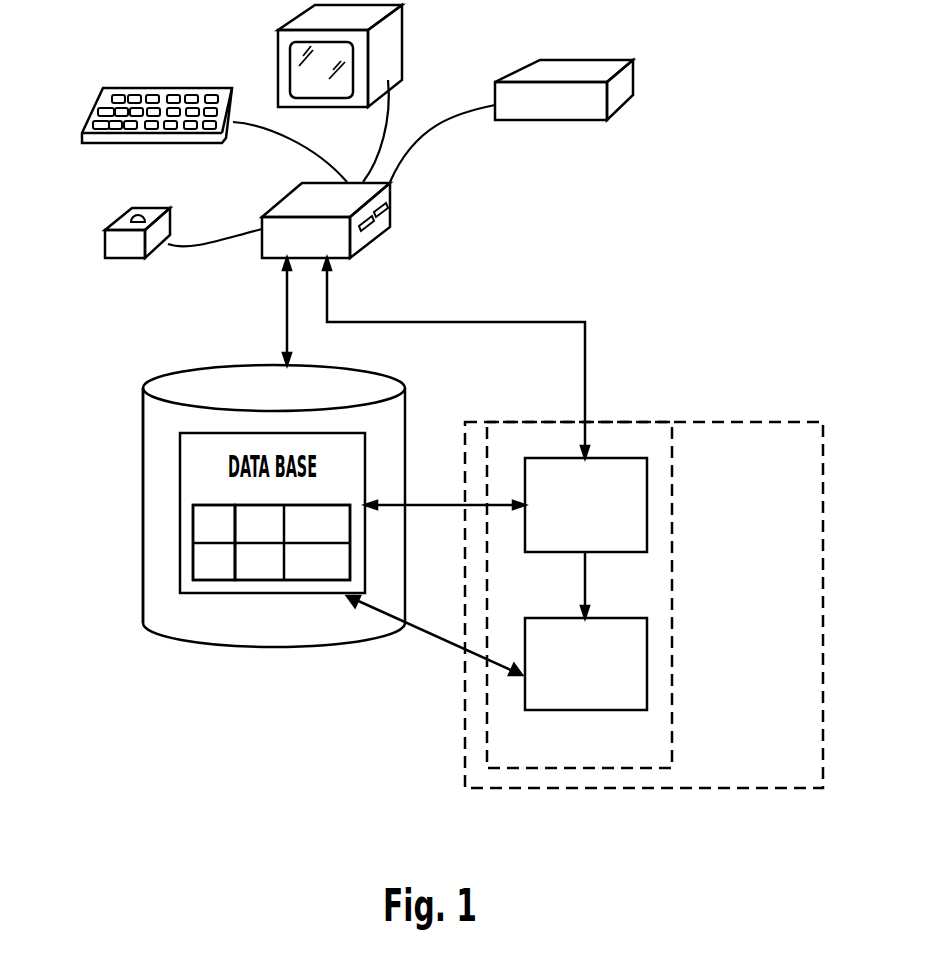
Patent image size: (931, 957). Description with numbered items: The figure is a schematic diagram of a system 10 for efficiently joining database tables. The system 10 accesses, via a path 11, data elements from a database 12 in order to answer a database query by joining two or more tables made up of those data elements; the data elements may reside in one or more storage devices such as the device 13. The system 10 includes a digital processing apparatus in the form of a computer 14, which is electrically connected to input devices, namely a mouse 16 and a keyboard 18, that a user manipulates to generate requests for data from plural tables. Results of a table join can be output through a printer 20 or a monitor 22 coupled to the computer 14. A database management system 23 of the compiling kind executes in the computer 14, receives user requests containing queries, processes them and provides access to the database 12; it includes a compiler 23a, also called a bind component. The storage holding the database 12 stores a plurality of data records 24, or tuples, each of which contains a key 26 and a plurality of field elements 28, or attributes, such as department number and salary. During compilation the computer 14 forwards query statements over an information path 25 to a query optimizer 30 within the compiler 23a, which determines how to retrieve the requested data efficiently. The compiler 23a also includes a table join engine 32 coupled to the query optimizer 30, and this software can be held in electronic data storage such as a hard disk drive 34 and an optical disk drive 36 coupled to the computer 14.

The system 10 is at (159, 722).
The path 11 is at (286, 300).
The database 12 is at (395, 412).
The storage device 13 is at (143, 412).
The computer 14 is at (367, 250).
The mouse 16 is at (130, 216).
The keyboard 18 is at (160, 88).
The printer 20 is at (598, 57).
The monitor 22 is at (402, 24).
The database management system 23 is at (775, 422).
The compiler 23a is at (632, 422).
The data record 24 is at (193, 520).
The information path 25 is at (483, 322).
The key 26 is at (220, 580).
The field elements 28 is at (285, 580).
The query optimizer 30 is at (617, 618).
The table join engine 32 is at (560, 552).
The hard disk drive 34 is at (390, 205).
The optical disk drive 36 is at (390, 227).